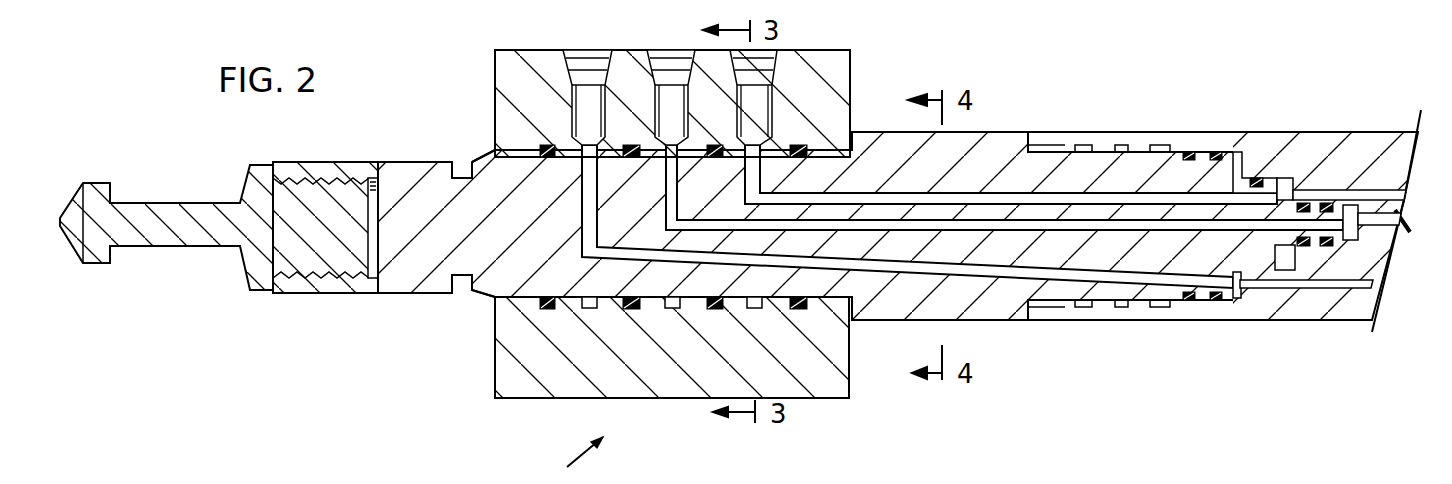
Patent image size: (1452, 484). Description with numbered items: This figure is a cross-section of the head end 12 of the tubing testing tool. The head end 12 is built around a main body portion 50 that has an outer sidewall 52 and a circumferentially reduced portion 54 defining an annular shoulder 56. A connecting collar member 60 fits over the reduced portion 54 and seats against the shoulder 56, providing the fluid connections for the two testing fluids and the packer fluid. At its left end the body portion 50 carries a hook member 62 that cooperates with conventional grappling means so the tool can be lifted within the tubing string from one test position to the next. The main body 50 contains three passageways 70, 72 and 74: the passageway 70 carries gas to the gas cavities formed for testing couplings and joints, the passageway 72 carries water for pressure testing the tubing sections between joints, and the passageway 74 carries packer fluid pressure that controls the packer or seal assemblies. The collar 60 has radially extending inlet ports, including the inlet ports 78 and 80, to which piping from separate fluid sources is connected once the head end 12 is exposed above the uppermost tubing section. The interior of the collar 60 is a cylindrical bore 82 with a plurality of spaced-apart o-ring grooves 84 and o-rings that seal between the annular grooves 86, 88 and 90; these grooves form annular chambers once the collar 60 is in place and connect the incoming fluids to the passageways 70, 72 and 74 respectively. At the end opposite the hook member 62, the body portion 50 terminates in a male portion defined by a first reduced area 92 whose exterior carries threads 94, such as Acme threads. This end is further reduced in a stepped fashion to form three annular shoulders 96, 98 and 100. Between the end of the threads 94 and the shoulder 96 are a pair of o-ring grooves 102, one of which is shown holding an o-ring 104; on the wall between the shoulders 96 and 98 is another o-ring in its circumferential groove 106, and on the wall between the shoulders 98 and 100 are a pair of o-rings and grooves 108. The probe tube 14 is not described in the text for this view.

The head end 12 is at (564, 460).
The probe tube 14 is at (1303, 322).
The main body portion 50 is at (893, 313).
The outer sidewall 52 is at (1012, 132).
The circumferentially reduced portion 54 is at (523, 147).
The annular shoulder 56 is at (845, 140).
The connecting collar member 60 is at (495, 358).
The hook member 62 is at (167, 247).
The passageway 70 is at (903, 193).
The passageway 72 is at (1125, 232).
The passageway 74 is at (945, 278).
The inlet port 78 is at (680, 58).
The inlet port 80 is at (603, 50).
The cylindrical bore 82 is at (515, 300).
The o-ring grooves 84 is at (547, 143).
The annular groove 86 is at (753, 305).
The annular groove 88 is at (672, 308).
The annular groove 90 is at (588, 308).
The first reduced area 92 is at (1087, 165).
The threads 94 is at (1107, 320).
The annular shoulder 96 is at (770, 57).
The annular shoulder 98 is at (1290, 262).
The annular shoulder 100 is at (1372, 245).
The o-ring grooves 102 is at (1175, 172).
The o-ring 104 is at (1185, 158).
The circumferential groove 106 is at (1250, 178).
The o-rings and grooves 108 is at (1313, 197).